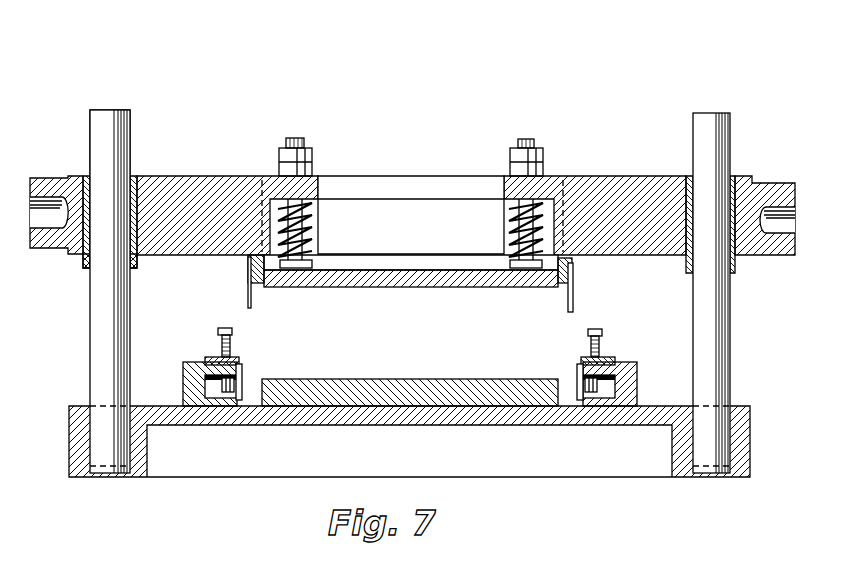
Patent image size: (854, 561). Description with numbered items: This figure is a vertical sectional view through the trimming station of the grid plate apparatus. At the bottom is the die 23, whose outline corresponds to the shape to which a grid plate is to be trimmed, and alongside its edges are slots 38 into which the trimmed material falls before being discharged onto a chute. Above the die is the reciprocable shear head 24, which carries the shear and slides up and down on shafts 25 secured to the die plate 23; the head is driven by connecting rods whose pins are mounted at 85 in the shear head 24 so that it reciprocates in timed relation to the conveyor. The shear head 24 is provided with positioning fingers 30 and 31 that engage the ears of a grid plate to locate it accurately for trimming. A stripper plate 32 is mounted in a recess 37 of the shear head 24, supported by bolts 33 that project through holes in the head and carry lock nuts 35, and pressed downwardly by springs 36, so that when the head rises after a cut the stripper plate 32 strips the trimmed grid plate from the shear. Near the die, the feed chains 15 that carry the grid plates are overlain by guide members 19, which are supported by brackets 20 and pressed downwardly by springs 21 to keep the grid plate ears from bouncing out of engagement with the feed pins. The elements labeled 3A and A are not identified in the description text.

The shear head 24 is at (204, 175).
The mounting for pins 85 is at (41, 208).
The shafts 25 is at (95, 327).
The bolts 33 is at (302, 143).
The lock nuts 35 is at (510, 153).
The die holder 3A is at (325, 176).
The recess 37 is at (375, 217).
The springs 36 is at (313, 234).
The positioning finger 30 is at (252, 300).
The positioning finger 31 is at (568, 298).
The stripper plate 32 is at (406, 288).
The pin A is at (576, 285).
The brackets 20 is at (183, 390).
The springs 21 is at (231, 346).
The guide members 19 is at (236, 364).
The feed chains 15 is at (242, 386).
The die 23 is at (428, 379).
The slots 38 is at (241, 408).